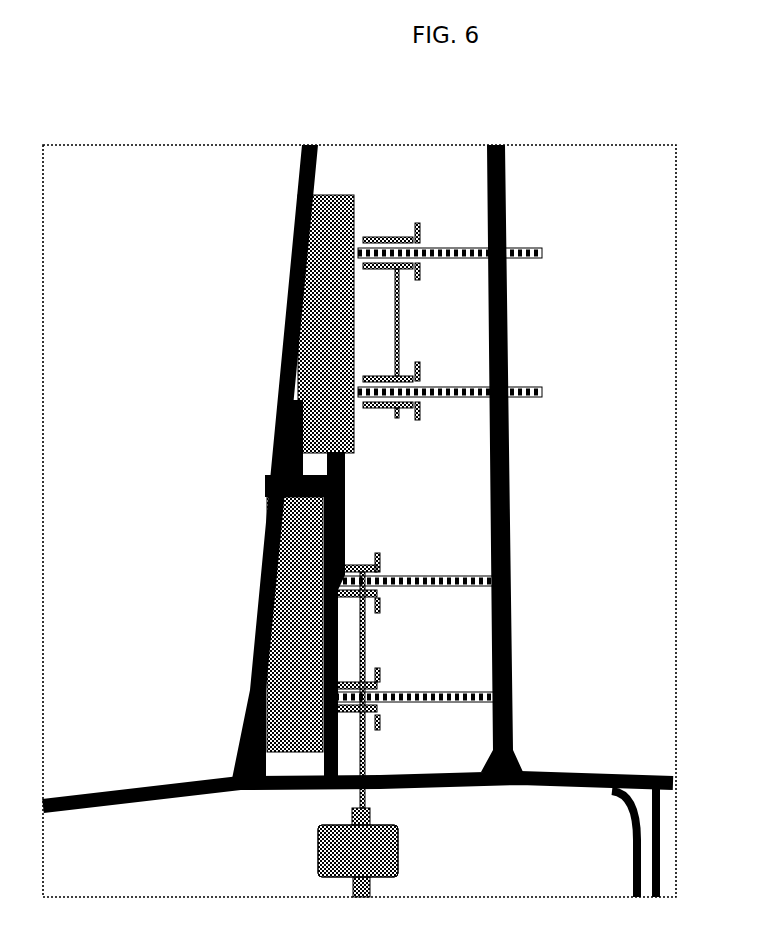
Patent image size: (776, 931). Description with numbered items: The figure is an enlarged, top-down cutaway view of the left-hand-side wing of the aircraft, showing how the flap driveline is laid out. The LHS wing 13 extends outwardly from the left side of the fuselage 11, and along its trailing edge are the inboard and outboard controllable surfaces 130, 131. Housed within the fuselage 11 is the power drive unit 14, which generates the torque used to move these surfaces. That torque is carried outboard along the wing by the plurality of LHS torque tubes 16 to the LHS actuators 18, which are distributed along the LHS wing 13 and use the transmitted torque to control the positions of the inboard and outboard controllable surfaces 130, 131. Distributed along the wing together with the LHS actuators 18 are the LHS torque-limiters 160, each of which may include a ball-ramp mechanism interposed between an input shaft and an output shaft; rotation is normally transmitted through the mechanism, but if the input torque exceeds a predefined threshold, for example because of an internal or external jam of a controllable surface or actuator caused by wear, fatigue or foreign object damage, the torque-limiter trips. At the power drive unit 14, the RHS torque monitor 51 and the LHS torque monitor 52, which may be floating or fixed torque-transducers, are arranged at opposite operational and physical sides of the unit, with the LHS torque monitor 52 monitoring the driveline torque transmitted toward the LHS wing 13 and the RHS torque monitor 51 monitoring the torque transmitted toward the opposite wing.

The fuselage 11 is at (115, 817).
The LHS wing 13 is at (463, 200).
The power drive unit (PDU) 14 is at (400, 848).
The LHS torque tubes 16 is at (360, 760).
The LHS actuators 18 is at (290, 360).
The RHS torque monitor 51 is at (405, 857).
The LHS torque monitor 52 is at (372, 818).
The inboard controllable surface 130 is at (263, 553).
The outboard controllable surface 131 is at (297, 255).
The LHS torque-limiters 160 is at (360, 560).